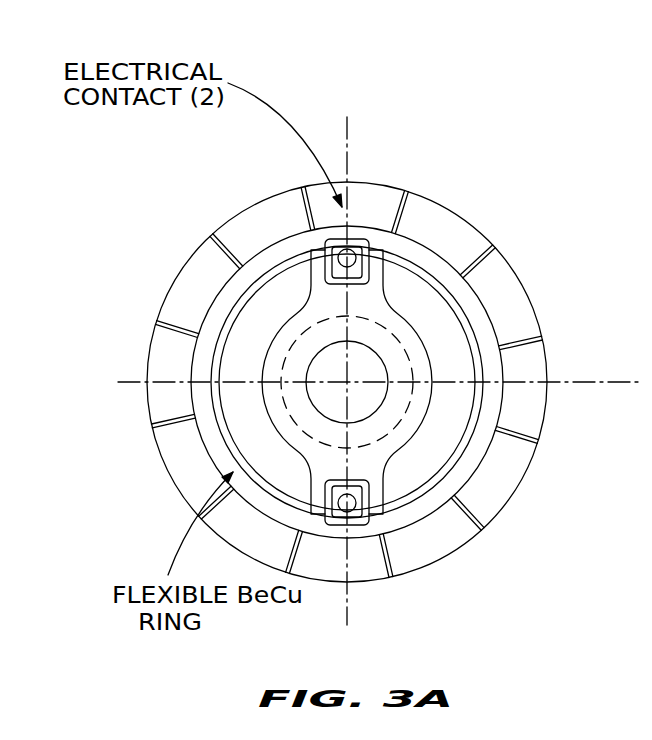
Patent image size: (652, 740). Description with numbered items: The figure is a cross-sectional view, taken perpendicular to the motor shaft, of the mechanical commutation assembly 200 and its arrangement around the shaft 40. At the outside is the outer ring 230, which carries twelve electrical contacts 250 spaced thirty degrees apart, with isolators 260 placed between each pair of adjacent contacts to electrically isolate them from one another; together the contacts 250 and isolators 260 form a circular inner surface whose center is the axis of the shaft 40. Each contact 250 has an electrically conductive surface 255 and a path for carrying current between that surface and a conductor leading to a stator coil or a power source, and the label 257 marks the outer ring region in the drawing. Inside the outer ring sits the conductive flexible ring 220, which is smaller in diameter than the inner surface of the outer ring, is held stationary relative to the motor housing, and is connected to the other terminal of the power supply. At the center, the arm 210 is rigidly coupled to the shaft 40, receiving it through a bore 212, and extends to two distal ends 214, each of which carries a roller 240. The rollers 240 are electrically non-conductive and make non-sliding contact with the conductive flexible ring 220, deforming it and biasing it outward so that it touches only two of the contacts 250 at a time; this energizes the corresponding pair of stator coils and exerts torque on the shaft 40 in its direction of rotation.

The commutation assembly 200 is at (440, 70).
The outer ring 230 is at (343, 181).
The electrical contacts 250 is at (458, 212).
The electrically conductive surface 255 is at (487, 457).
The housing outer surface 257 is at (527, 488).
The isolators 260 is at (543, 335).
The conductive flexible ring 220 is at (478, 370).
The arm 210 is at (513, 265).
The bore 212 is at (313, 428).
The distal ends 214 is at (384, 252).
The rollers 240 is at (325, 273).
The shaft 40 is at (386, 403).